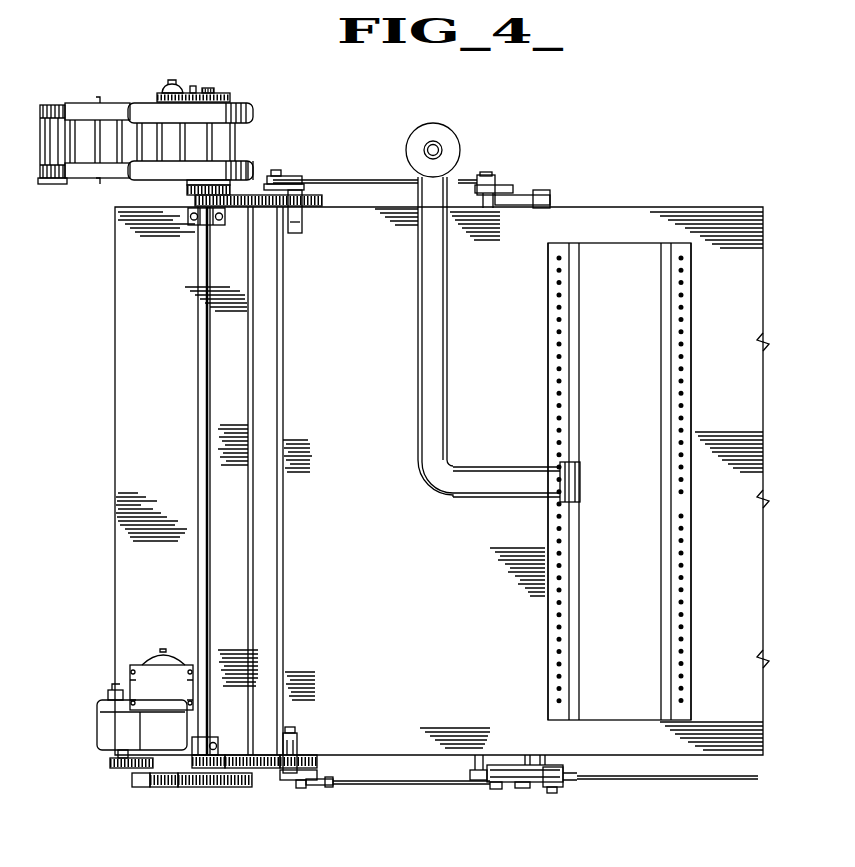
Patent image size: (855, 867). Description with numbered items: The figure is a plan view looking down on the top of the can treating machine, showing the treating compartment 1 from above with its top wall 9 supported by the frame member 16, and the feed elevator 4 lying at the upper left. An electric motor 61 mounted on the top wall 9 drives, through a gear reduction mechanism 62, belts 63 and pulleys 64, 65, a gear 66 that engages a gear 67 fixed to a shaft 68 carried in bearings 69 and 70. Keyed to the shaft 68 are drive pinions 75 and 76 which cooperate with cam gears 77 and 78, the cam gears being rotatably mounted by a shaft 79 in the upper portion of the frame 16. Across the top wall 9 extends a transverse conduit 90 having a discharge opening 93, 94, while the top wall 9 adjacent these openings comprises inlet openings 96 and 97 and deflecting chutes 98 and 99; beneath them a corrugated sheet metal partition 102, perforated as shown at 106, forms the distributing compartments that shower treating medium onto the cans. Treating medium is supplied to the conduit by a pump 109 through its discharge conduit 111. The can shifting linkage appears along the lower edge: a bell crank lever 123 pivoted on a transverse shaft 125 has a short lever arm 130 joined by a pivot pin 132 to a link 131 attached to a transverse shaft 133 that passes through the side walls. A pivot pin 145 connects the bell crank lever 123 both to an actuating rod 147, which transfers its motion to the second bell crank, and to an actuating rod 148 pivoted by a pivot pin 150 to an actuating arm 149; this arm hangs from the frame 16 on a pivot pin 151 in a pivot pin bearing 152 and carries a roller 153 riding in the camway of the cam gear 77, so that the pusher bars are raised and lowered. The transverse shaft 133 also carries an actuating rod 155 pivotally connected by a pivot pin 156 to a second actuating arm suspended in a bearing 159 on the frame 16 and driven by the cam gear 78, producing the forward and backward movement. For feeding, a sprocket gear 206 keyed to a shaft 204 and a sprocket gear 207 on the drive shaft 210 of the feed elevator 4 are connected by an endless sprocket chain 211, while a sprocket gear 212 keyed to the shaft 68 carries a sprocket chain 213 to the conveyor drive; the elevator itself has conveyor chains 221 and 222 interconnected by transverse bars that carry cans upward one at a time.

The treating compartment 1 is at (647, 750).
The feed elevator 4 is at (115, 104).
The top wall 9 is at (37, 143).
The frame member 16 is at (275, 616).
The electric motor 61 is at (152, 675).
The gear reduction mechanism 62 is at (145, 738).
The belts 63 is at (113, 768).
The pulley 64 is at (116, 756).
The pulley 65 is at (132, 778).
The gear 66 is at (142, 787).
The gear 67 is at (178, 787).
The shaft 68 is at (198, 473).
The bearing 69 is at (207, 740).
The bearing 70 is at (204, 223).
The drive pinion 75 is at (192, 763).
The drive pinion 76 is at (187, 197).
The cam gear 77 is at (317, 756).
The cam gear 78 is at (322, 199).
The shaft 79 is at (263, 770).
The transverse conduit 90 is at (628, 548).
The discharge opening 93 is at (580, 583).
The discharge opening 94 is at (662, 507).
The inlet opening 96 is at (549, 641).
The inlet opening 97 is at (688, 622).
The deflecting chute 98 is at (573, 622).
The deflecting chute 99 is at (666, 338).
The corrugated sheet metal partition 102 is at (685, 408).
The perforations 106 is at (685, 583).
The pump 109 is at (405, 138).
The discharge conduit 111 is at (473, 472).
The bell crank lever 123 is at (557, 767).
The transverse shaft 125 is at (528, 788).
The short lever arm 130 is at (515, 765).
The link 131 is at (470, 773).
The pivot pin 132 is at (496, 789).
The transverse shaft 133 is at (488, 176).
The pivot pin 145 is at (557, 794).
The actuating rod 147 is at (697, 780).
The actuating rod 148 is at (413, 786).
The actuating arm 149 is at (292, 788).
The pivot pin 150 is at (310, 786).
The pivot pin 151 is at (297, 731).
The pivot pin bearing 152 is at (300, 747).
The roller 153 is at (318, 769).
The actuating rod 155 is at (382, 179).
The pivot pin 156 is at (278, 175).
The bearing 159 is at (302, 222).
The shaft 204 is at (192, 90).
The sprocket gear 206 is at (163, 94).
The sprocket gear 207 is at (228, 95).
The drive shaft 210 is at (213, 92).
The endless sprocket chain 211 is at (205, 92).
The sprocket gear 212 is at (228, 190).
The sprocket chain 213 is at (186, 190).
The conveyor chain 221 is at (47, 103).
The conveyor chain 222 is at (44, 180).